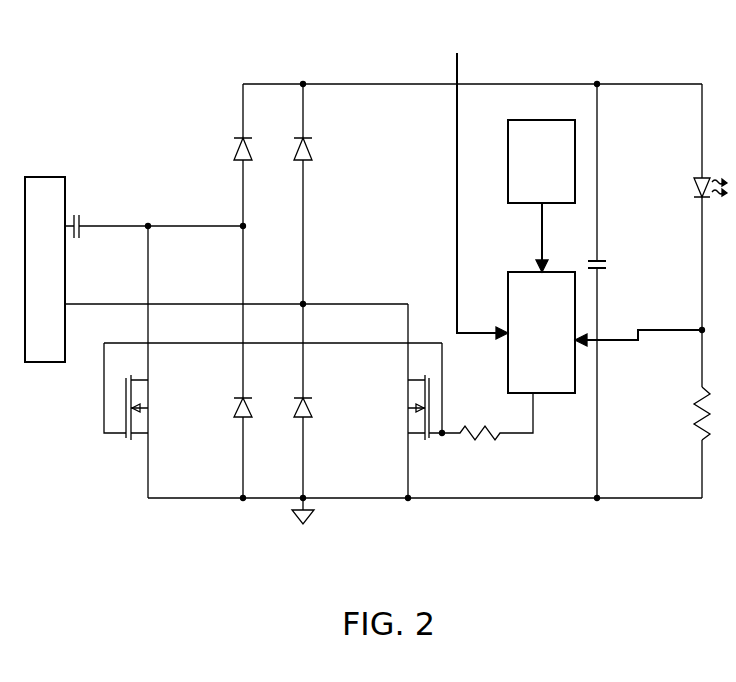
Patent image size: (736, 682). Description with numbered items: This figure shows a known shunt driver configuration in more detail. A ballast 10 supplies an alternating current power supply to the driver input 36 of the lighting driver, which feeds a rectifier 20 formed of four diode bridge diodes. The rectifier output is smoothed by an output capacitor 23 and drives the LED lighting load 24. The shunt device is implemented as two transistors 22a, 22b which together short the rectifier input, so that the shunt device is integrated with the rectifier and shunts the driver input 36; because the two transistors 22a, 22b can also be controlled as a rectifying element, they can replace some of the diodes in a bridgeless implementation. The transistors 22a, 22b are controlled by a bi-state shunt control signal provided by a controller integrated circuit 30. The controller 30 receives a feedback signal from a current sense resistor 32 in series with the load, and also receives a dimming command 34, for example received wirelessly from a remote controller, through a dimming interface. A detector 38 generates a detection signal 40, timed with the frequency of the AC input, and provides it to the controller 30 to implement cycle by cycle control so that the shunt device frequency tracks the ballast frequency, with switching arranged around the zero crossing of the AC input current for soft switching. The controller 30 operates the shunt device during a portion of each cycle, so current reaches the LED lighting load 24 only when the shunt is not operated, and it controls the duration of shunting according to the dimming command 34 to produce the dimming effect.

The ballast 10 is at (45, 177).
The rectifier 20 is at (271, 68).
The transistor 22a is at (181, 372).
The transistor 22b is at (408, 425).
The output capacitor 23 is at (605, 262).
The LED lighting load 24 is at (696, 182).
The controller integrated circuit 30 is at (508, 289).
The current sense resistor 32 is at (698, 418).
The dimming command 34 is at (460, 62).
The driver input 36 is at (243, 226).
The detector 38 is at (508, 170).
The detection signal 40 is at (542, 240).